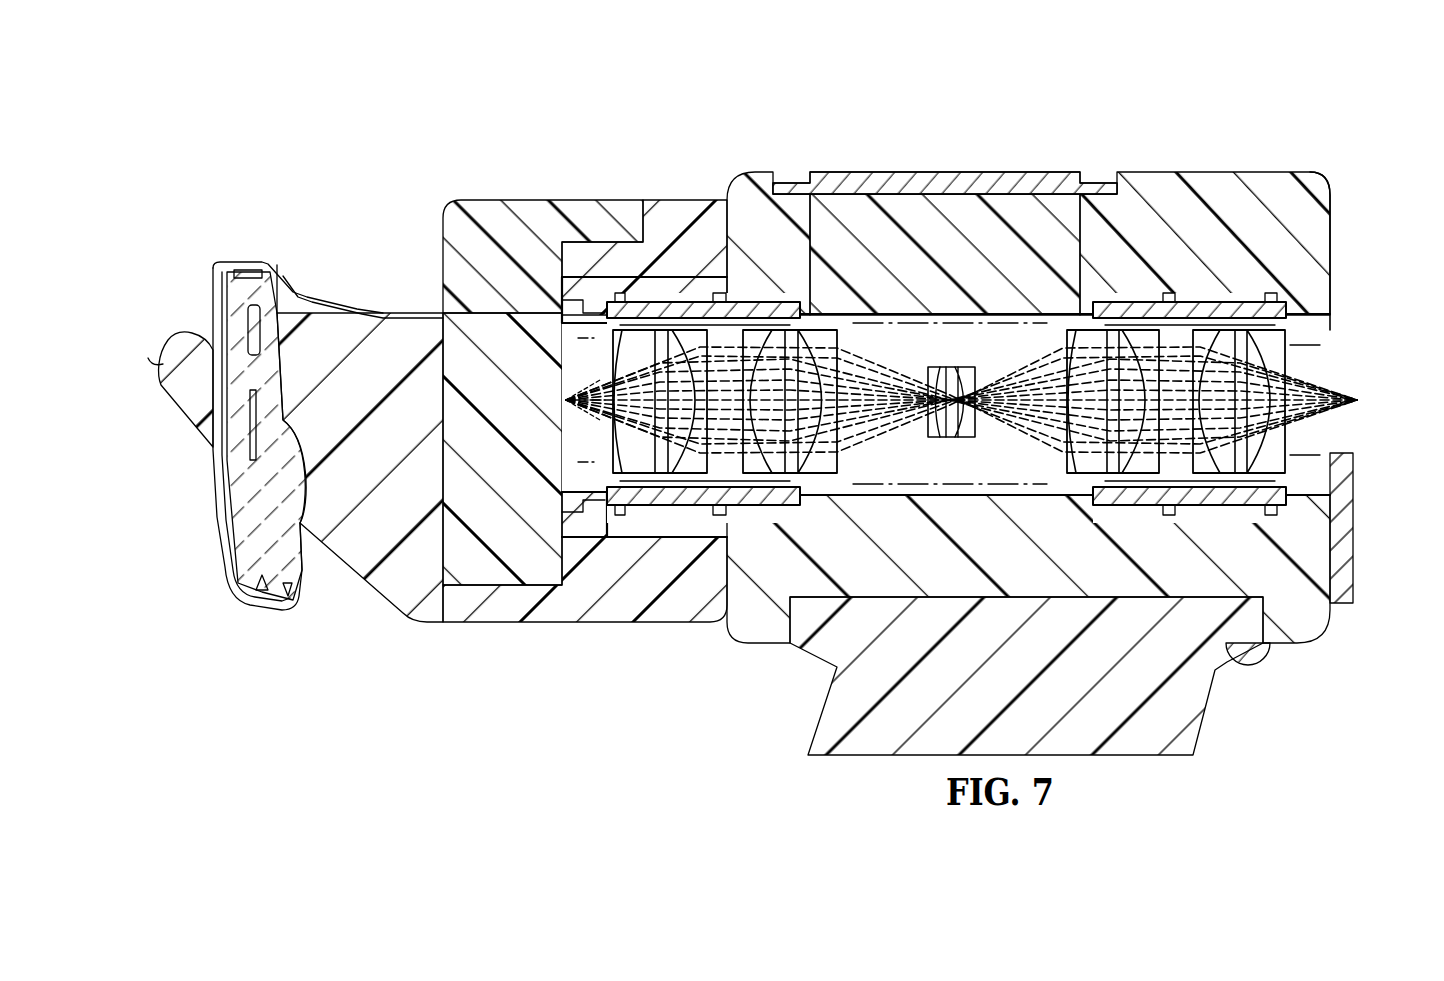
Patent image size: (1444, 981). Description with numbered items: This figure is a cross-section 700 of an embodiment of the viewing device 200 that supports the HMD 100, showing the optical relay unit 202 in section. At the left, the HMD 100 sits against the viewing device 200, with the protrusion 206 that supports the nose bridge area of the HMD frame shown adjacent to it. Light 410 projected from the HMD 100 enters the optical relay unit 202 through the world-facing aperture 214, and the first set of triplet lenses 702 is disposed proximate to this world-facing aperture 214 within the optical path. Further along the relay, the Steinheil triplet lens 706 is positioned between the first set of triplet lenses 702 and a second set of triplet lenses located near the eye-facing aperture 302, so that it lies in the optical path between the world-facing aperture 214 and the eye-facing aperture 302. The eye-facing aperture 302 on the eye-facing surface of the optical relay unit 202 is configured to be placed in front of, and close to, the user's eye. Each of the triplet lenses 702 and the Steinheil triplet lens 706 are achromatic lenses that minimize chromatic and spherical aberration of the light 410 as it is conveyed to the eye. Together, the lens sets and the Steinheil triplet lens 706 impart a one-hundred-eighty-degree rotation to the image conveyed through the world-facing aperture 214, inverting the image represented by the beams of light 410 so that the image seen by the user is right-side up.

The cross-section 700 is at (750, 391).
The HMD 100 is at (205, 223).
The viewing device 200 is at (945, 396).
The optical relay unit 202 is at (1325, 232).
The protrusion 206 is at (162, 354).
The world-facing aperture 214 is at (562, 362).
The eye-facing aperture 302 is at (1333, 360).
The light 410 is at (592, 424).
The first set of triplet lenses 702 is at (842, 330).
The Steinheil triplet lens 706 is at (953, 440).